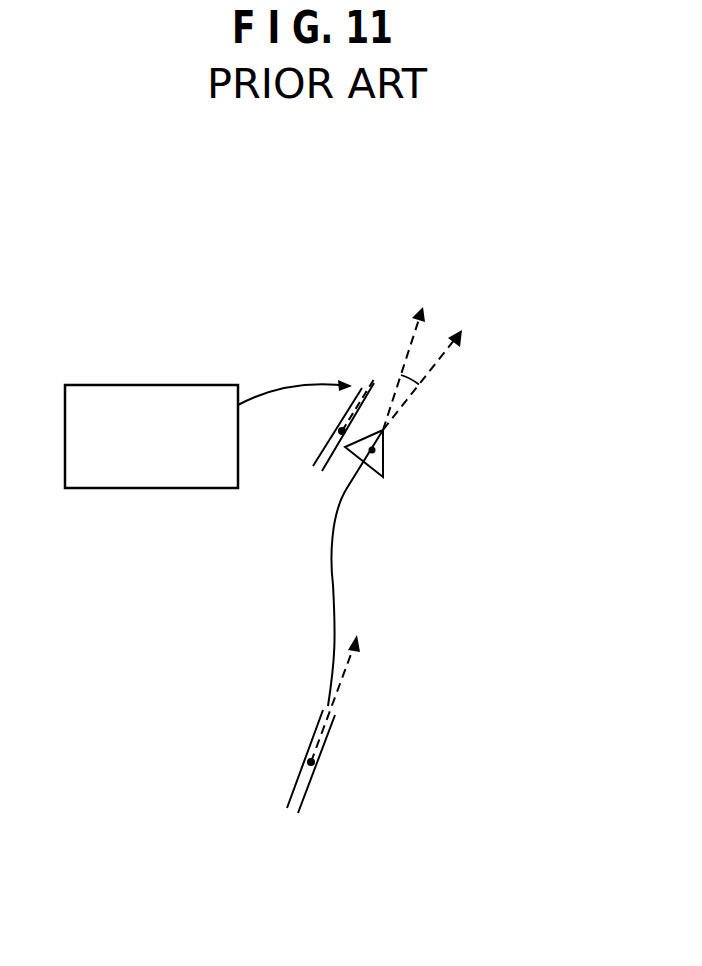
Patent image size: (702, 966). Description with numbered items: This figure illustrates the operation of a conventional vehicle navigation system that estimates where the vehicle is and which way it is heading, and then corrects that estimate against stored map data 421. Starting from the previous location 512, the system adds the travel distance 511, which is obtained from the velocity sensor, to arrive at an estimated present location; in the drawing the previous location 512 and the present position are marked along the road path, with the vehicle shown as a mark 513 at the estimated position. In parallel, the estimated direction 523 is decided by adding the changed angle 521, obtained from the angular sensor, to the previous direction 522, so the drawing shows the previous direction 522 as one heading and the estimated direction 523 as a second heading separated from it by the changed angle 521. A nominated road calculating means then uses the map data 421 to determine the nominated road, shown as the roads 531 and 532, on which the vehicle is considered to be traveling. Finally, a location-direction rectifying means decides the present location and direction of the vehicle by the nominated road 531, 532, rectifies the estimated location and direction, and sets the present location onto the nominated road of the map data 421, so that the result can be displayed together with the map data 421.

The map data 421 is at (188, 383).
The travel distance 511 is at (333, 577).
The previous location 512 is at (312, 763).
The vehicle position mark 513 is at (374, 450).
The changed angle 521 is at (428, 368).
The previous direction 522 is at (434, 316).
The estimated direction 523 is at (460, 342).
The nominated road 531 is at (318, 459).
The nominated road 532 is at (375, 369).